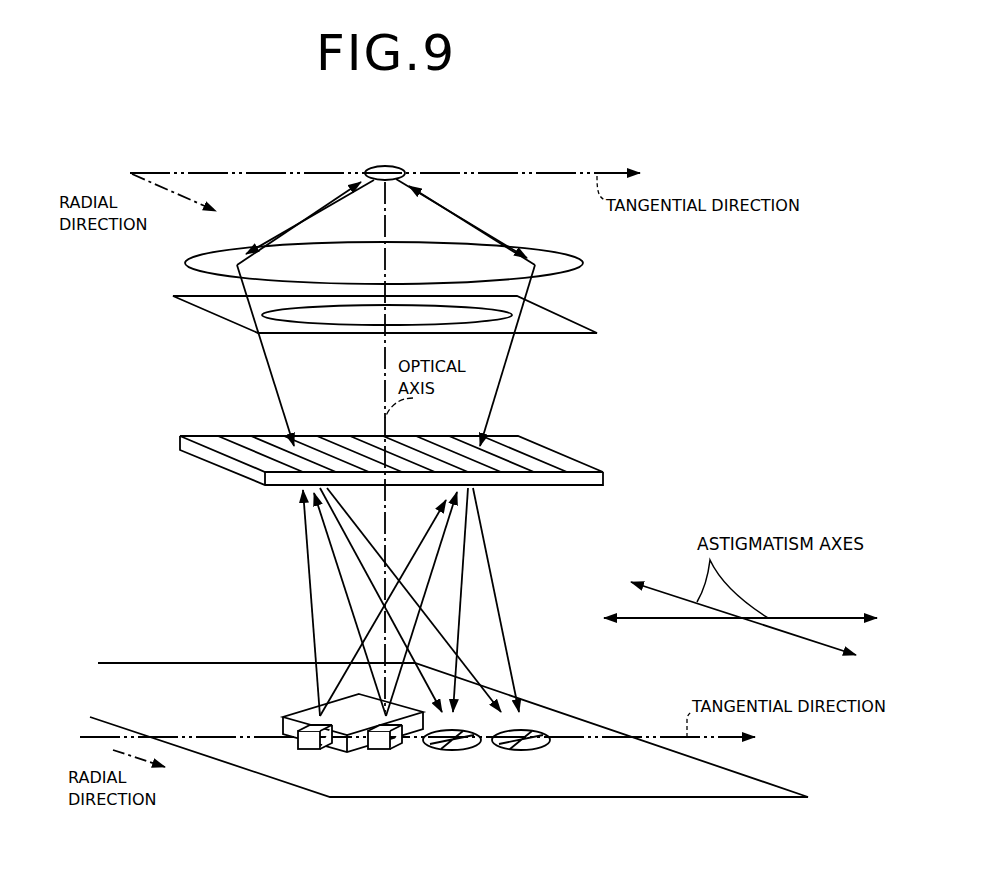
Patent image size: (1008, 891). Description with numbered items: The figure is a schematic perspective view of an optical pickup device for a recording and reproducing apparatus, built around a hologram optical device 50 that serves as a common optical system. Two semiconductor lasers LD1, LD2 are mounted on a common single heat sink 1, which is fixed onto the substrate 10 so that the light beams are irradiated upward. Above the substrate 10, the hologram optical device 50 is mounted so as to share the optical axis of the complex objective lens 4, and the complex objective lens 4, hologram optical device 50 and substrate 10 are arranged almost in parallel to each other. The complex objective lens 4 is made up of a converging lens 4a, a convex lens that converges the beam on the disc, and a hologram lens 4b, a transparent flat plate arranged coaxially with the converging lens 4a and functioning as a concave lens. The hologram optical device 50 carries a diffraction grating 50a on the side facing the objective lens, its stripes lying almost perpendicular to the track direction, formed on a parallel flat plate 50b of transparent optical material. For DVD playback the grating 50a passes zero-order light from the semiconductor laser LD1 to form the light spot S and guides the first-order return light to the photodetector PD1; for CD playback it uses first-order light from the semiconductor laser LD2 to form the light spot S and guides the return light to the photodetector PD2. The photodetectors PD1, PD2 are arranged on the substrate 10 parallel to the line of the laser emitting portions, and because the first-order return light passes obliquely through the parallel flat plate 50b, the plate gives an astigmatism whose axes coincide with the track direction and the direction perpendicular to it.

The light spot S is at (410, 176).
The complex objective lens 4 is at (446, 288).
The converging lens 4a is at (583, 260).
The hologram lens 4b is at (597, 333).
The hologram optical device 50 is at (465, 470).
The diffraction grating 50a is at (573, 455).
The parallel flat plate 50b is at (578, 486).
The heat sink 1 is at (300, 712).
The semiconductor laser LD1 is at (393, 752).
The semiconductor laser LD2 is at (310, 752).
The photodetector PD1 is at (463, 752).
The photodetector PD2 is at (535, 752).
The substrate 10 is at (770, 787).